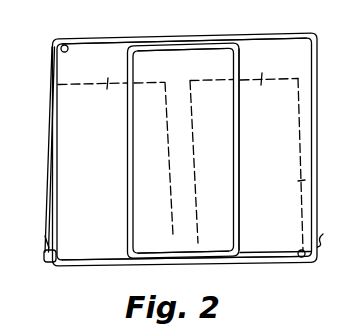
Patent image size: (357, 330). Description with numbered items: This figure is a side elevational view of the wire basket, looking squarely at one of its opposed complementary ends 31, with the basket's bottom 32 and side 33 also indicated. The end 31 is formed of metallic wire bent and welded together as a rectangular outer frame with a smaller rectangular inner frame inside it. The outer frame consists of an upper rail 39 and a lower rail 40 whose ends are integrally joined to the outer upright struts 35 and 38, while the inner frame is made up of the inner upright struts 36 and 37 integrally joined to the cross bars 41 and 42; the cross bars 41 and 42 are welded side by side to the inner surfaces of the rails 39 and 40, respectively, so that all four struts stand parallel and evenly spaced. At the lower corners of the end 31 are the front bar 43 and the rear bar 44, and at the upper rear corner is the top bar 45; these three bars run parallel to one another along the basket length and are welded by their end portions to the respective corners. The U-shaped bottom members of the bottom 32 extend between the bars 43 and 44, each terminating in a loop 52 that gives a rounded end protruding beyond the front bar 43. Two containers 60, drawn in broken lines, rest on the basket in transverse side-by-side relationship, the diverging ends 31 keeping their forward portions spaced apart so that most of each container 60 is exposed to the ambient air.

The end 31 is at (228, 34).
The bottom 32 is at (289, 247).
The side 33 is at (40, 238).
The upright strut 35 is at (58, 171).
The upright strut 36 is at (127, 205).
The upright strut 37 is at (243, 135).
The upright strut 38 is at (300, 181).
The upper rail 39 is at (112, 38).
The lower rail 40 is at (115, 265).
The cross bar 41 is at (181, 51).
The cross bar 42 is at (162, 256).
The front bar 43 is at (301, 258).
The rear bar 44 is at (44, 255).
The top bar 45 is at (63, 44).
The loop 52 is at (329, 233).
The container 60 is at (108, 77).